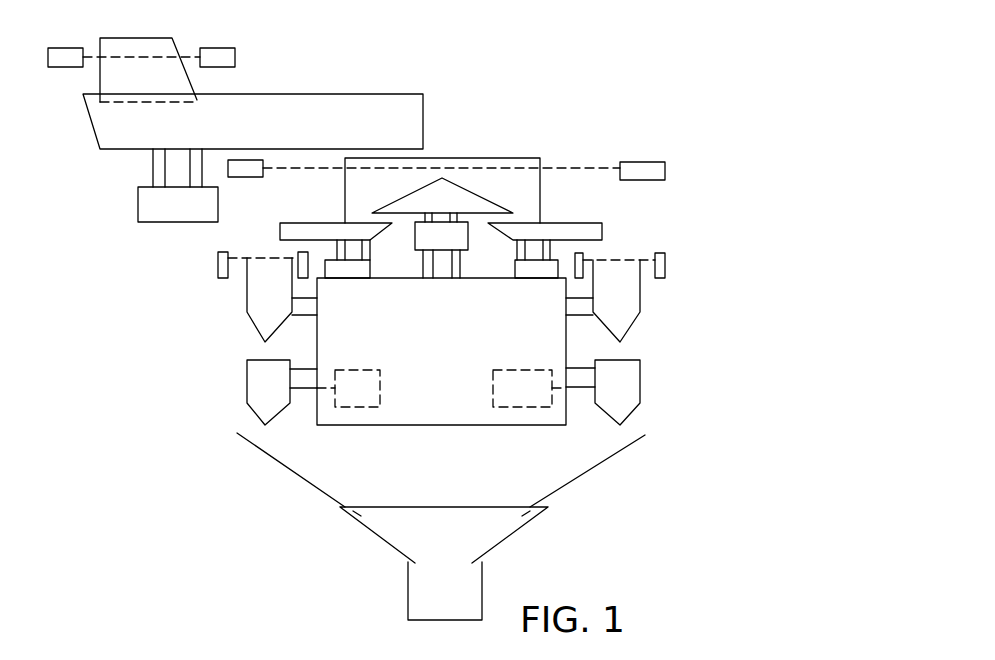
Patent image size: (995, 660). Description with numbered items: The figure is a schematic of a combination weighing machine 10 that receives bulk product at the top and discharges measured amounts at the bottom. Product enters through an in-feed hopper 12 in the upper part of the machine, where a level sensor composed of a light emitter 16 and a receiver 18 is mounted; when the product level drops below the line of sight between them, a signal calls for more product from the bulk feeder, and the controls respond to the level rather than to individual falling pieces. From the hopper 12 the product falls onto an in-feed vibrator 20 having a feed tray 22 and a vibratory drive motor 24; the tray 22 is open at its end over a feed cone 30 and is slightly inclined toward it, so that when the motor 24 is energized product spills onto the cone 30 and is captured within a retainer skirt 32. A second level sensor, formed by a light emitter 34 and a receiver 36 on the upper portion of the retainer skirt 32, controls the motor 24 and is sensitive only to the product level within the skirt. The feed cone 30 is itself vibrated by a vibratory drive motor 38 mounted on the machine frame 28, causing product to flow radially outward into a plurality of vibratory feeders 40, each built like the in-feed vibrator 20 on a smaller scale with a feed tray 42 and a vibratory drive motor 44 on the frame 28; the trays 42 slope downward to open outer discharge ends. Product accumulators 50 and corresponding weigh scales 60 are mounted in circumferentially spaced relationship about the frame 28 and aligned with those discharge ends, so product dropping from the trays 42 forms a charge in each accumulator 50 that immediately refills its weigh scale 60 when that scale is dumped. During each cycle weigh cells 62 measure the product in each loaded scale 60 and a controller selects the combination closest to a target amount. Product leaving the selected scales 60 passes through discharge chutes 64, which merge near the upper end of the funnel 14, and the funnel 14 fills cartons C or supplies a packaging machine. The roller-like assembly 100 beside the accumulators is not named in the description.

The combination weighing machine 10 is at (591, 68).
The in-feed hopper 12 is at (124, 44).
The funnel 14 is at (376, 534).
The light emitter 16 is at (220, 55).
The receiver 18 is at (70, 64).
The in-feed vibrator 20 is at (421, 84).
The feed tray 22 is at (412, 127).
The vibratory drive motor 24 is at (146, 195).
The machine frame 28 is at (458, 427).
The feed cone 30 is at (467, 197).
The retainer skirt 32 is at (345, 195).
The light emitter 34 is at (637, 162).
The receiver 36 is at (240, 177).
The vibratory drive motor 38 is at (462, 238).
The vibratory feeders 40 is at (330, 213).
The feed tray 42 is at (280, 231).
The vibratory drive motor 44 is at (350, 268).
The product accumulators 50 is at (248, 294).
The weigh scales 60 is at (252, 375).
The weigh cells 62 is at (382, 387).
The discharge chutes 64 is at (297, 475).
The roller assembly 100 is at (202, 267).
The cartons C is at (408, 590).